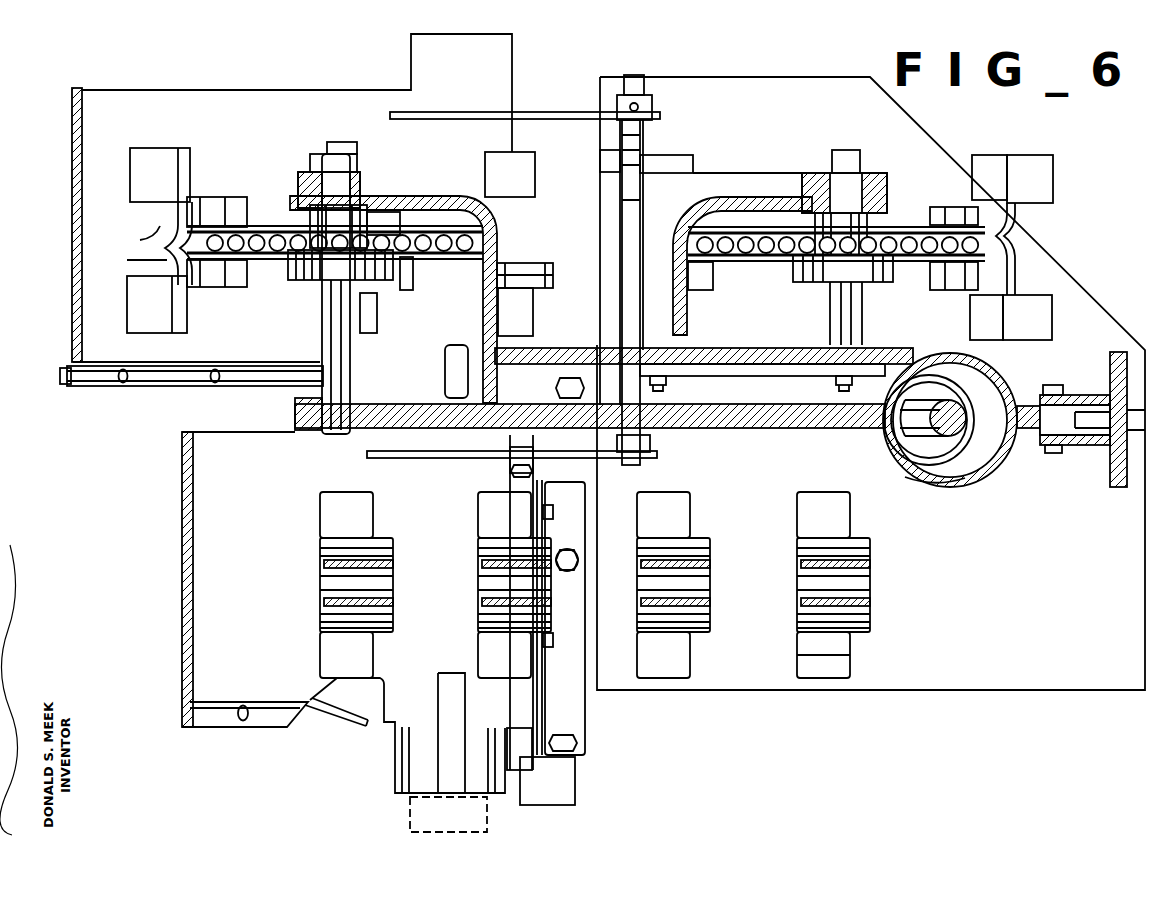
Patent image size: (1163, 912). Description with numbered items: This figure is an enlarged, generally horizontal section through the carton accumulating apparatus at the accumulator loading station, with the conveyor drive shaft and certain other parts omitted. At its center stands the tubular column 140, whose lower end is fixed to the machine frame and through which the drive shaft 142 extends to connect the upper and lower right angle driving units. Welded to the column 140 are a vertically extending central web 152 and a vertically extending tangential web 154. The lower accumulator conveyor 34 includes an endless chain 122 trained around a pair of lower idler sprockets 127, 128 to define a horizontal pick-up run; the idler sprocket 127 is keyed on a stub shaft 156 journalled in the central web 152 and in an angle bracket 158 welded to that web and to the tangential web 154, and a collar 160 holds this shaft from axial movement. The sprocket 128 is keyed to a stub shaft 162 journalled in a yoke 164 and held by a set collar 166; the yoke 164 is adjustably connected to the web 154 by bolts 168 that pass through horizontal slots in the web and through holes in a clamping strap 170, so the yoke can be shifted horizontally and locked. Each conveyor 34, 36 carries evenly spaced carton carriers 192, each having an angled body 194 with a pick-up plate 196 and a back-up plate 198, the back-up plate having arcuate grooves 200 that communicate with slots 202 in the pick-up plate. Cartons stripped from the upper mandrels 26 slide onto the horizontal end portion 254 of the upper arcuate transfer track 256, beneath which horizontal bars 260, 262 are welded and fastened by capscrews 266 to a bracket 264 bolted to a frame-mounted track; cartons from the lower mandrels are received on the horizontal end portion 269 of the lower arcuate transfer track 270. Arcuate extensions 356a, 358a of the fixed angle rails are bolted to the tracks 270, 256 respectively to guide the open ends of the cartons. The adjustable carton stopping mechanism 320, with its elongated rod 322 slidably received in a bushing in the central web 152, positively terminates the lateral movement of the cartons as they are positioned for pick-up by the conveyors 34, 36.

The mandrel 26 is at (410, 823).
The lower accumulator conveyor 34 is at (1062, 148).
The upper accumulator conveyor 36 is at (860, 656).
The endless chain 122 is at (568, 232).
The idler sprocket 127 is at (296, 240).
The idler sprocket 128 is at (880, 242).
The tubular column 140 is at (975, 470).
The drive shaft 142 is at (955, 425).
The central web 152 is at (690, 430).
The tangential web 154 is at (765, 355).
The stub shaft 156 is at (330, 341).
The angle bracket 158 is at (303, 180).
The collar 160 is at (330, 143).
The stub shaft 162 is at (848, 296).
The yoke 164 is at (690, 212).
The set collar 166 is at (830, 165).
The bolt 168 is at (660, 386).
The clamping strap 170 is at (738, 370).
The carton carrier 192 is at (146, 142).
The angled body 194 is at (198, 275).
The pick-up plate 196 is at (140, 311).
The back-up plate 198 is at (173, 318).
The arcuate groove 200 is at (172, 226).
The slot 202 is at (150, 280).
The horizontal end portion 254 is at (455, 604).
The upper arcuate transfer track 256 is at (183, 530).
The horizontal bar 260 is at (510, 500).
The horizontal bar 262 is at (537, 645).
The bracket 264 is at (570, 602).
The capscrew 266 is at (556, 512).
The horizontal end portion 269 is at (450, 326).
The lower arcuate carton transfer track 270 is at (72, 183).
The carton stopping mechanism 320 is at (678, 110).
The rod 322 is at (640, 78).
The arcuate extension 356a is at (192, 377).
The arcuate extension 358a is at (218, 722).